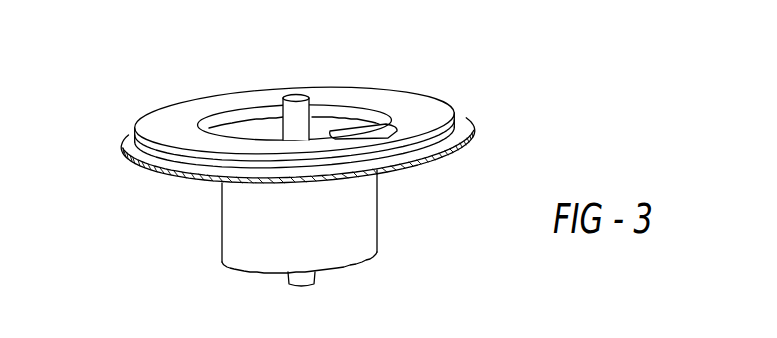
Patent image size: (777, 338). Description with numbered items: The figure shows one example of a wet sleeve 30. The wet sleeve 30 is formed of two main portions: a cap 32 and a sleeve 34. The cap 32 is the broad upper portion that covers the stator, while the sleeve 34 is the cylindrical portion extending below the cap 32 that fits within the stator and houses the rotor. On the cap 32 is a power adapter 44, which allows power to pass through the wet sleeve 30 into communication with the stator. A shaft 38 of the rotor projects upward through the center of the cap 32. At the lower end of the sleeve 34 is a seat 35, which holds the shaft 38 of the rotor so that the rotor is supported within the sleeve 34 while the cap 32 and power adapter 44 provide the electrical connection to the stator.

The wet sleeve 30 is at (165, 60).
The cap 32 is at (162, 132).
The sleeve 34 is at (237, 224).
The seat 35 is at (308, 277).
The shaft 38 is at (297, 100).
The power adapter 44 is at (370, 128).